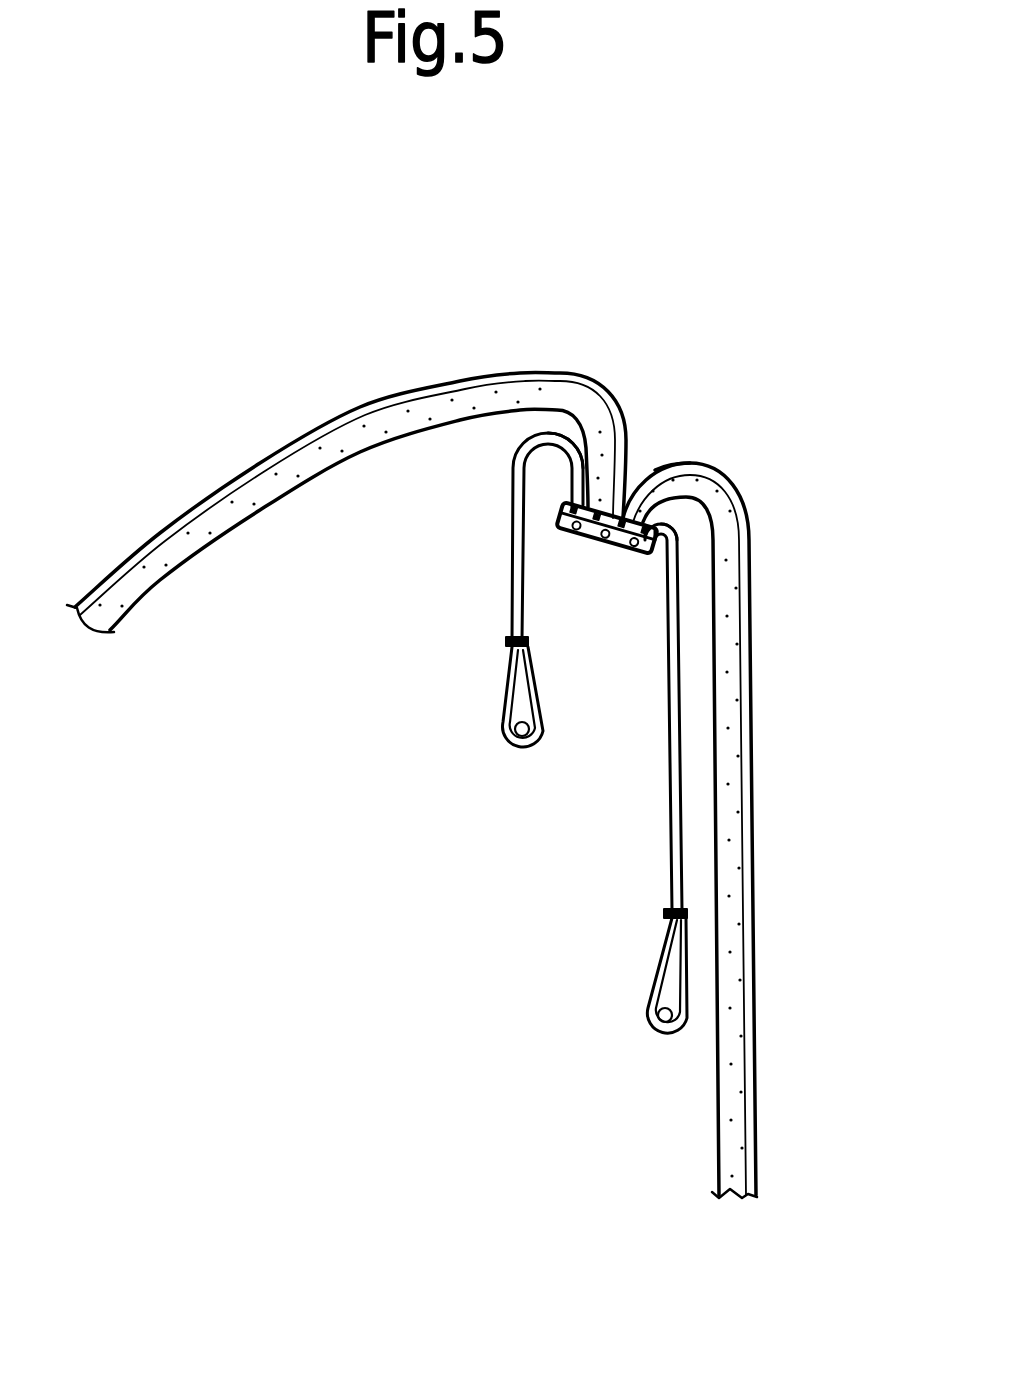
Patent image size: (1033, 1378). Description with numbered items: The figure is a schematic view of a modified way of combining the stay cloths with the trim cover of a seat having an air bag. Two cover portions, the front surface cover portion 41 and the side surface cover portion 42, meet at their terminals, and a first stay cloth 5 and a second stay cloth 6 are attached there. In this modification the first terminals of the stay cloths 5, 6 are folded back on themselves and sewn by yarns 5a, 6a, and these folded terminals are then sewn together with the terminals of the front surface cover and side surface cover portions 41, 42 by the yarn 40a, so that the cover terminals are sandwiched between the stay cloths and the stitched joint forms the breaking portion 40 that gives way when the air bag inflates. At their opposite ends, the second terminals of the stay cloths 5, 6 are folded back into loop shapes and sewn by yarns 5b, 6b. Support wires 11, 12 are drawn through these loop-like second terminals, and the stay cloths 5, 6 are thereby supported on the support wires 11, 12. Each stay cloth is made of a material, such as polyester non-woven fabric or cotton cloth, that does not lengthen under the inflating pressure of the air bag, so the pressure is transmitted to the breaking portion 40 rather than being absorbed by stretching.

The first stay cloth 5 is at (510, 577).
The yarn 5a is at (543, 478).
The yarn 5b is at (508, 624).
The second stay cloth 6 is at (670, 836).
The yarn 6a is at (683, 515).
The yarn 6b is at (664, 913).
The support wire 11 is at (507, 733).
The support wire 12 is at (648, 1042).
The breaking portion 40 is at (637, 462).
The yarn 40a is at (662, 468).
The front surface cover portion 41 is at (316, 424).
The side surface cover portion 42 is at (752, 631).